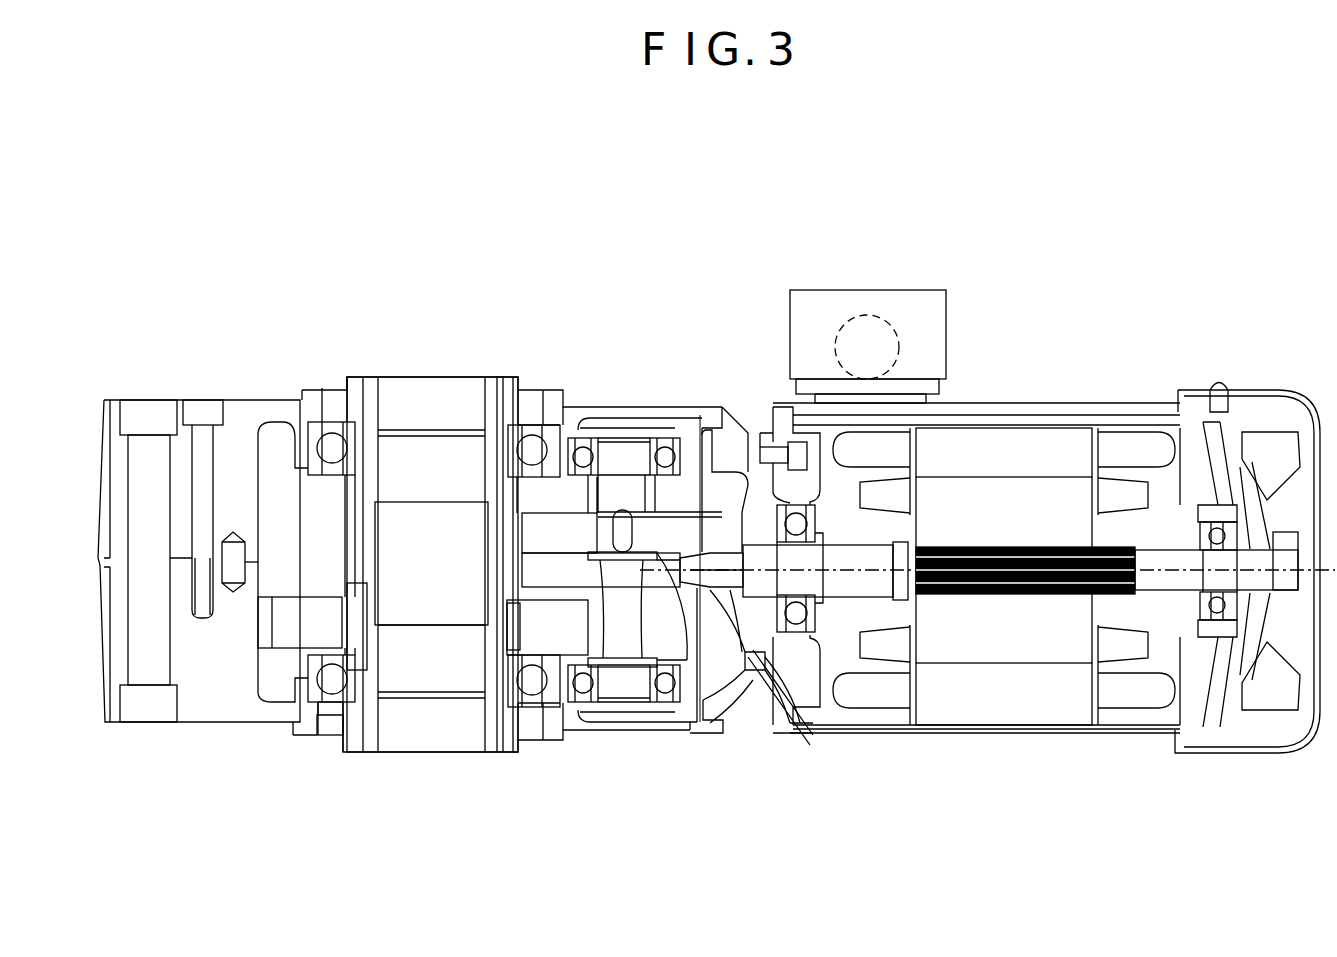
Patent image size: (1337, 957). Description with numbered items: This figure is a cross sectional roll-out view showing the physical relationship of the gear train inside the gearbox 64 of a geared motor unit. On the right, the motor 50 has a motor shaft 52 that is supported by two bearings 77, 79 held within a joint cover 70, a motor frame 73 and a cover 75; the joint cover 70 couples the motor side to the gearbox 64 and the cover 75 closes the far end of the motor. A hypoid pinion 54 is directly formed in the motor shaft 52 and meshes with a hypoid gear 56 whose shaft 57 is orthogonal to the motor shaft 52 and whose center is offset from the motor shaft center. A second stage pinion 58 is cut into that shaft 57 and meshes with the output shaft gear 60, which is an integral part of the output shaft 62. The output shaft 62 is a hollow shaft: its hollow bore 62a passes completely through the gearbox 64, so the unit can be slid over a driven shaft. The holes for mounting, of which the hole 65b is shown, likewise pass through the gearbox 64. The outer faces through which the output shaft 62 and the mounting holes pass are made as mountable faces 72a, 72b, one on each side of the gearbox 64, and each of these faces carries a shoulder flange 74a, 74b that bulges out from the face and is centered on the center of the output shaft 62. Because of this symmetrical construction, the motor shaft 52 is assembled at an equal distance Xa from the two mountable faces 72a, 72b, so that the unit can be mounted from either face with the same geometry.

The motor 50 is at (1030, 403).
The motor shaft 52 is at (765, 605).
The hypoid pinion 54 is at (742, 600).
The hypoid gear 56 is at (688, 673).
The shaft of the hypoid gear 57 is at (636, 485).
The second stage pinion 58 is at (655, 640).
The output shaft gear 60 is at (538, 640).
The output shaft 62 is at (372, 383).
The hollow bore 62a is at (388, 405).
The gearbox 64 is at (541, 306).
The hole for mounting 65b is at (175, 705).
The joint cover 70 is at (778, 415).
The mountable face 72a is at (590, 400).
The mountable face 72b is at (588, 742).
The motor frame 73 is at (1028, 737).
The shoulder flange 74a is at (303, 388).
The shoulder flange 74b is at (292, 735).
The cover 75 is at (1230, 755).
The bearing 77 is at (790, 510).
The bearing 79 is at (1215, 528).
The equal distance Xa is at (721, 568).